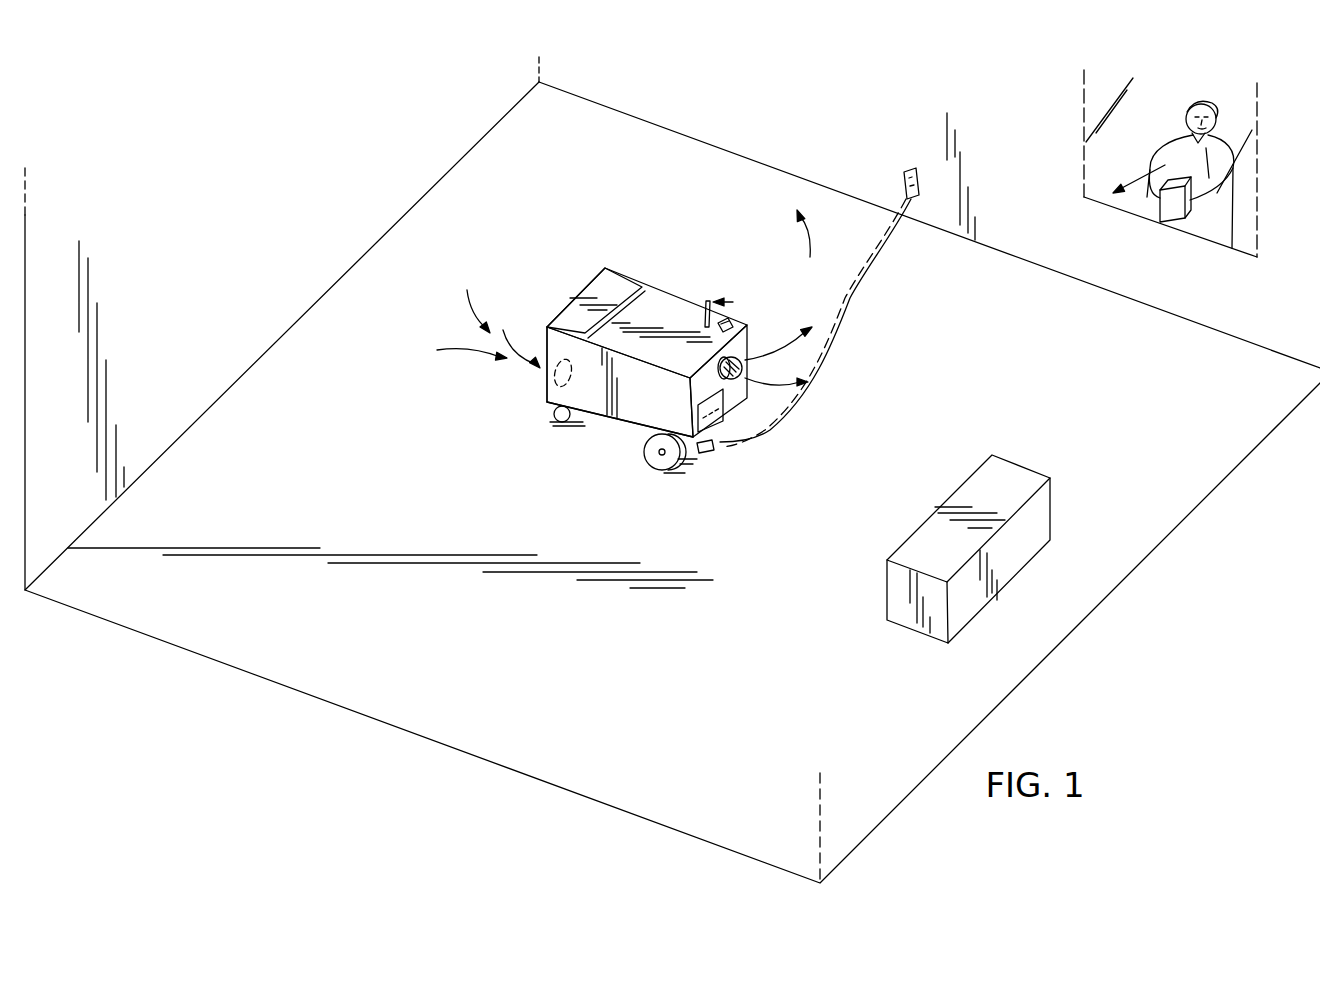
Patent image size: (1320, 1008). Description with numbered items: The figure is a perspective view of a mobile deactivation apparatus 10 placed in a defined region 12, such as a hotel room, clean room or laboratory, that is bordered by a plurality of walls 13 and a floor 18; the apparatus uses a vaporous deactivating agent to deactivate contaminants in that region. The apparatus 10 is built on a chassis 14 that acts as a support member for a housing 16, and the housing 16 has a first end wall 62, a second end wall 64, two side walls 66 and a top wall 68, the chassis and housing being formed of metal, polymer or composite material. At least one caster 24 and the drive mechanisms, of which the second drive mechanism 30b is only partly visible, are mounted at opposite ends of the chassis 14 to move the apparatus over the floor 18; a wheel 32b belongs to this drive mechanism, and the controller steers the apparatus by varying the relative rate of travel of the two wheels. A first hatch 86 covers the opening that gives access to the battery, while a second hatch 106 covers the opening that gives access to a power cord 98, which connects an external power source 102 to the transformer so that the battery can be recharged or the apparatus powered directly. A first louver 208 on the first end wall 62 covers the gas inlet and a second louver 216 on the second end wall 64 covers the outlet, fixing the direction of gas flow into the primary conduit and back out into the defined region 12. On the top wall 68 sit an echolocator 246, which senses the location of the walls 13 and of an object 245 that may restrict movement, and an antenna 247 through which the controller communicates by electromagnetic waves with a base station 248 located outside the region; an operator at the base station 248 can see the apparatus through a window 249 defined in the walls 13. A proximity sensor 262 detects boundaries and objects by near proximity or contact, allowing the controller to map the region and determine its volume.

The mobile deactivation apparatus 10 is at (670, 356).
The defined region 12 is at (338, 640).
The walls 13 is at (177, 410).
The chassis 14 is at (605, 425).
The housing 16 is at (628, 412).
The floor 18 is at (998, 285).
The caster 24 is at (595, 403).
The second drive mechanism 30b is at (667, 486).
The wheel 32b is at (653, 463).
The first end wall 62 is at (547, 330).
The second end wall 64 is at (738, 397).
The side walls 66 is at (657, 290).
The top wall 68 is at (673, 307).
The first hatch 86 is at (613, 287).
The power cord 98 is at (858, 305).
The external power source 102 is at (912, 172).
The second hatch 106 is at (715, 410).
The first louver 208 is at (555, 383).
The second louver 216 is at (745, 367).
The object 245 is at (1013, 480).
The echolocator 246 is at (732, 323).
The antenna 247 is at (710, 303).
The base station 248 is at (1173, 222).
The window 249 is at (1242, 198).
The proximity sensor 262 is at (703, 455).